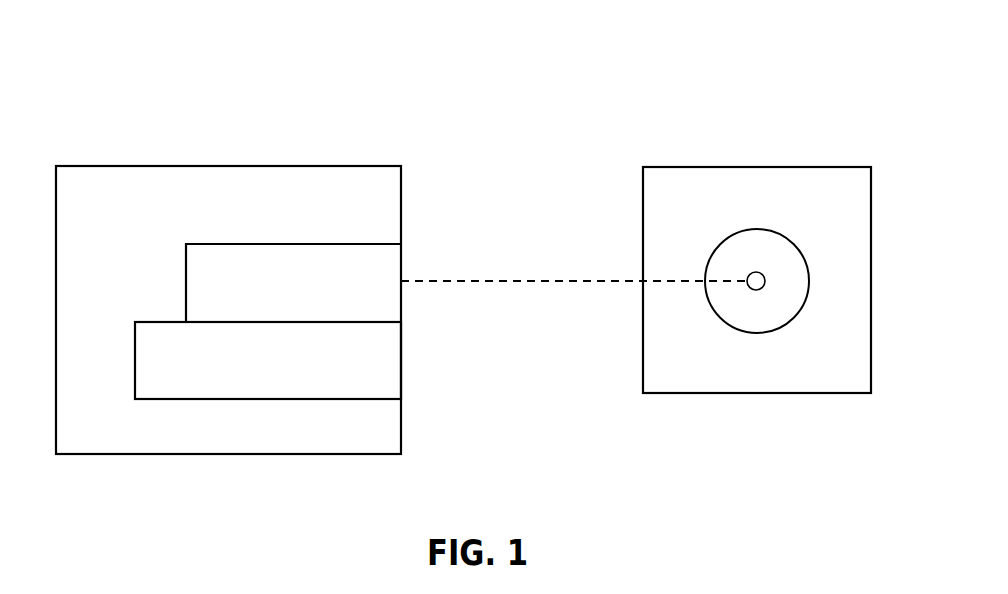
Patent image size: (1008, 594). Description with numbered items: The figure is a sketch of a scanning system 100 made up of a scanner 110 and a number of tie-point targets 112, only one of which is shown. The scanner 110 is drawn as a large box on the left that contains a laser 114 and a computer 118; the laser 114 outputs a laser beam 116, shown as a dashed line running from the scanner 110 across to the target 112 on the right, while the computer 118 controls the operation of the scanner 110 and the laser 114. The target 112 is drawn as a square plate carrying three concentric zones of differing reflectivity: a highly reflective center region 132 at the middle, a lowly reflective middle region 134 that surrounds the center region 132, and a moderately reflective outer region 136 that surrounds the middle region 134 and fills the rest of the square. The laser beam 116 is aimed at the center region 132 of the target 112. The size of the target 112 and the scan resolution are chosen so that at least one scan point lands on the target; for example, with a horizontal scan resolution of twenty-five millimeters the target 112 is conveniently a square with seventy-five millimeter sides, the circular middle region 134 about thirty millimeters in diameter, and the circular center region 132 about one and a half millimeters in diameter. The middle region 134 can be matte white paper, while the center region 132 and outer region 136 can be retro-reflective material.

The scanning system 100 is at (722, 122).
The scanner 110 is at (303, 166).
The tie-point target 112 is at (798, 167).
The laser 114 is at (378, 293).
The laser beam 116 is at (477, 281).
The computer 118 is at (380, 362).
The center region 132 is at (753, 290).
The middle region 134 is at (763, 320).
The outer region 136 is at (820, 373).